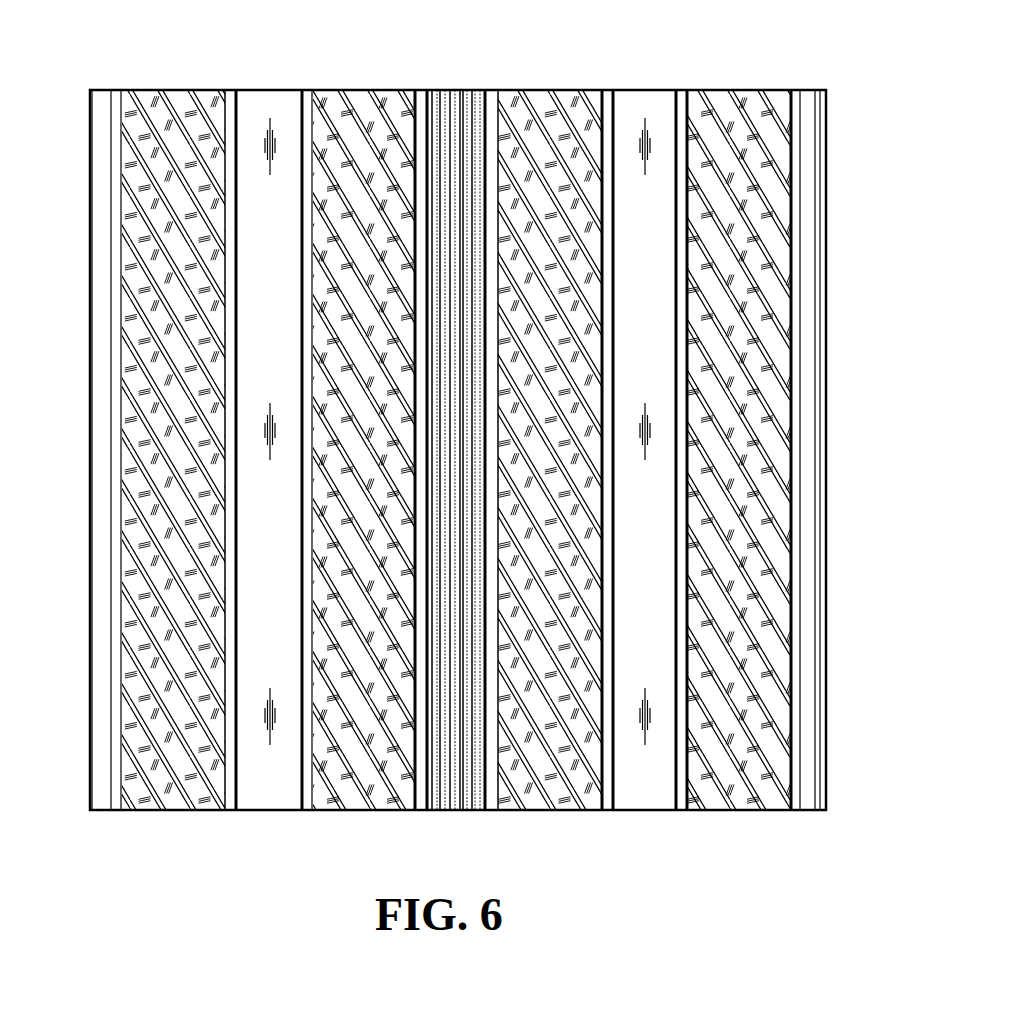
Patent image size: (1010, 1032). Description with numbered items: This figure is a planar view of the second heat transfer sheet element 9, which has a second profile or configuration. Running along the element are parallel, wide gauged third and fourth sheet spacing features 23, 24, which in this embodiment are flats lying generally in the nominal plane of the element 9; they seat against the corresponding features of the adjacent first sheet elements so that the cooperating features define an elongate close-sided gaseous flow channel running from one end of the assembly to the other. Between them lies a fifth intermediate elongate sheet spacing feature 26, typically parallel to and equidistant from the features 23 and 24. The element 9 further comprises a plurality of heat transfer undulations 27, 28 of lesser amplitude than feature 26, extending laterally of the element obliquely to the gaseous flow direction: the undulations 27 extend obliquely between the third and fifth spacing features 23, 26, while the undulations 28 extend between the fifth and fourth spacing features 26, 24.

The second heat transfer sheet element 9 is at (946, 74).
The third sheet spacing feature 23 is at (270, 105).
The fourth sheet spacing feature 24 is at (641, 105).
The fifth intermediate elongate sheet spacing feature 26 is at (455, 110).
The heat transfer undulations 27 is at (380, 105).
The heat transfer undulations 28 is at (157, 105).